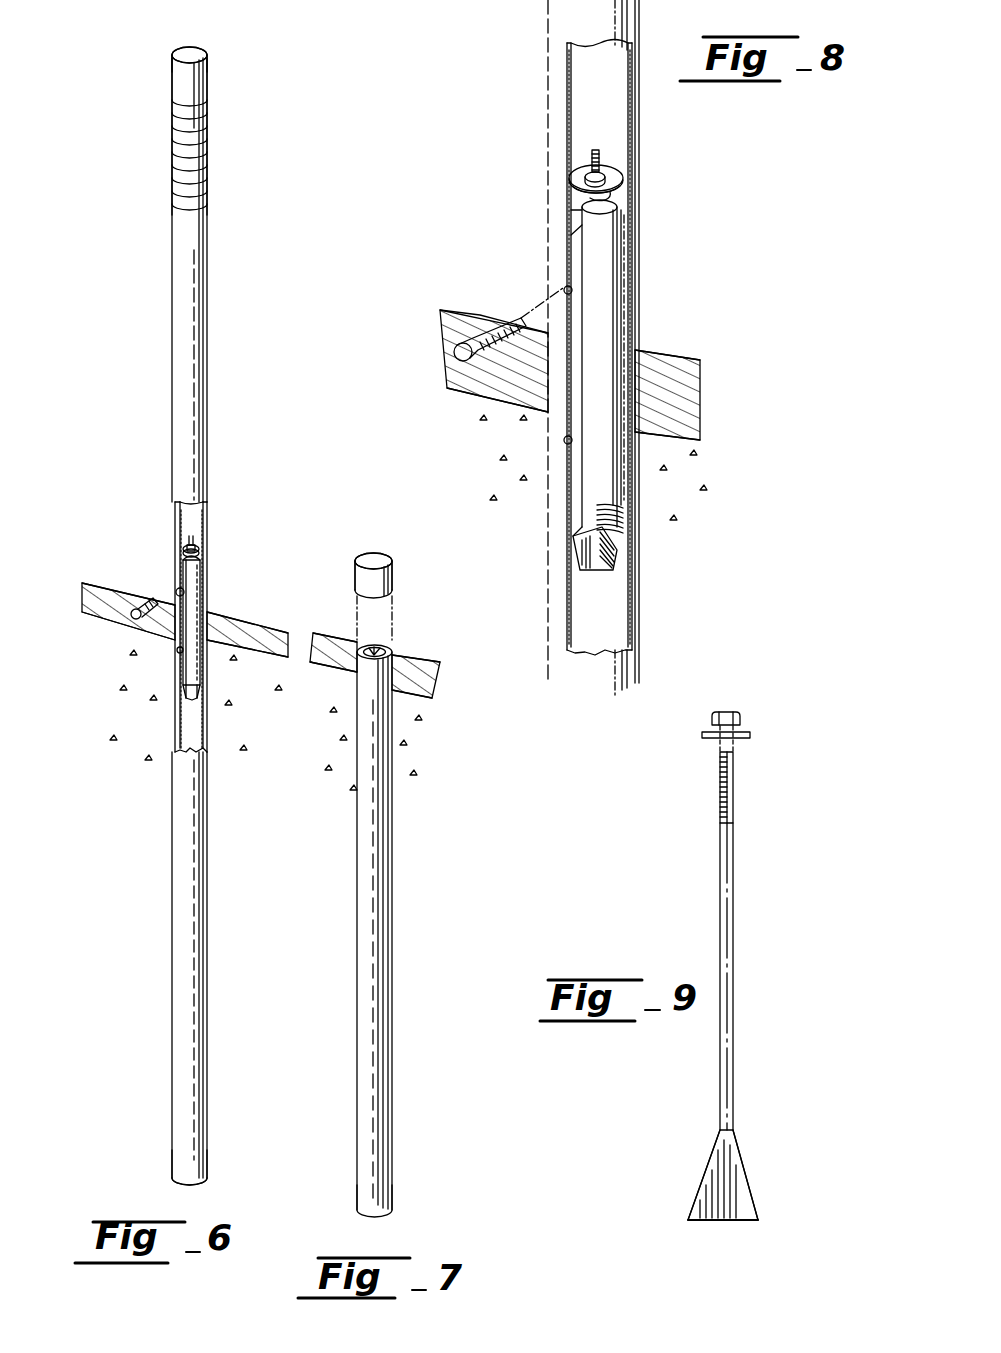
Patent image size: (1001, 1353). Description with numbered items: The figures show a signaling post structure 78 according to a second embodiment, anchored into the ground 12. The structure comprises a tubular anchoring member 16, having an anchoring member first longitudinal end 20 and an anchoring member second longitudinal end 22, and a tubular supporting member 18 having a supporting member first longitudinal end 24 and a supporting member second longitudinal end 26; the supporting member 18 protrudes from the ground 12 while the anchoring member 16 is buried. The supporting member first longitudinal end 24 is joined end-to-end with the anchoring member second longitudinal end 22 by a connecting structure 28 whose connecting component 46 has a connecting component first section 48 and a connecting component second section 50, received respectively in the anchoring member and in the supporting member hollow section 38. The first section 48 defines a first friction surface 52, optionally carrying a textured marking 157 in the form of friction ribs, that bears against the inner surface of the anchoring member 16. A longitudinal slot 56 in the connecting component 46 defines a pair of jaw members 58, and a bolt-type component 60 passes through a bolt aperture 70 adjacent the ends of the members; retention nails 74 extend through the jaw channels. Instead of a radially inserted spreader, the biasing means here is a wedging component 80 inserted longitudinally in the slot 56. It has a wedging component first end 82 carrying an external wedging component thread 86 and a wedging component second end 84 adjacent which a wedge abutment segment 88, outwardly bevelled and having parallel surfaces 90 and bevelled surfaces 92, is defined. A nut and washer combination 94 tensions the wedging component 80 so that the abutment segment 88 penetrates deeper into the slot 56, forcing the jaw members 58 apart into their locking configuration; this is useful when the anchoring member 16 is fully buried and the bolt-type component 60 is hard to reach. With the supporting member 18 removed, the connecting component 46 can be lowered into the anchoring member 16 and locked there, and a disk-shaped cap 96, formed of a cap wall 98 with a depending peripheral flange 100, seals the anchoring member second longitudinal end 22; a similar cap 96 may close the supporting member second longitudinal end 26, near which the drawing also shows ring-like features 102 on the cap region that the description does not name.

In FIG. 7, the ground 12 is at (408, 730).
In FIG. 6, the tubular anchoring member 16 is at (183, 893).
In FIG. 7, the tubular anchoring member 16 is at (365, 905).
In FIG. 8, the tubular anchoring member 16 is at (548, 656).
In FIG. 6, the tubular supporting member 18 is at (193, 352).
In FIG. 8, the tubular supporting member 18 is at (548, 86).
In FIG. 6, the anchoring member first longitudinal end 20 is at (160, 1155).
In FIG. 7, the anchoring member first longitudinal end 20 is at (405, 1197).
In FIG. 6, the anchoring member second longitudinal end 22 is at (350, 687).
In FIG. 8, the anchoring member second longitudinal end 22 is at (573, 415).
In FIG. 6, the supporting member first longitudinal end 24 is at (213, 606).
In FIG. 8, the supporting member first longitudinal end 24 is at (650, 348).
In FIG. 6, the supporting member second longitudinal end 26 is at (150, 50).
In FIG. 6, the connecting structure 28 is at (192, 666).
In FIG. 6, the supporting member hollow section 38 is at (188, 516).
In FIG. 7, the connecting component 46 is at (388, 640).
In FIG. 6, the connecting component first section 48 is at (188, 655).
In FIG. 6, the connecting component second section 50 is at (195, 588).
In FIG. 8, the first friction surface 52 is at (602, 476).
In FIG. 8, the slot 56 is at (578, 222).
In FIG. 8, the jaw members 58 is at (592, 270).
In FIG. 6, the bolt-type component 60 is at (130, 626).
In FIG. 8, the bolt-type component 60 is at (452, 353).
In FIG. 6, the bolt aperture 70 is at (178, 593).
In FIG. 8, the bolt aperture 70 is at (565, 288).
In FIG. 8, the retention nail 74 is at (626, 180).
In FIG. 6, the post structure 78 is at (95, 472).
In FIG. 9, the wedging component 80 is at (690, 880).
In FIG. 9, the wedging component first end 82 is at (768, 768).
In FIG. 9, the wedging component second end 84 is at (650, 1166).
In FIG. 8, the external wedging component thread 86 is at (590, 165).
In FIG. 9, the external wedging component thread 86 is at (720, 784).
In FIG. 6, the wedge abutment segment 88 is at (180, 712).
In FIG. 9, the wedge abutment segment 88 is at (785, 1180).
In FIG. 8, the abutment segment parallel surfaces 90 is at (586, 548).
In FIG. 9, the abutment segment parallel surfaces 90 is at (720, 1205).
In FIG. 8, the abutment segment bevelled surfaces 92 is at (618, 553).
In FIG. 9, the abutment segment bevelled surfaces 92 is at (702, 1190).
In FIG. 6, the nut and washer combination 94 is at (191, 546).
In FIG. 8, the nut and washer combination 94 is at (572, 178).
In FIG. 9, the nut and washer combination 94 is at (760, 718).
In FIG. 6, the cap 96 is at (213, 70).
In FIG. 7, the cap 96 is at (405, 572).
In FIG. 6, the cap wall 98 is at (197, 53).
In FIG. 7, the cap wall 98 is at (382, 560).
In FIG. 6, the peripheral flange 100 is at (180, 85).
In FIG. 7, the peripheral flange 100 is at (362, 580).
In FIG. 6, the cap ridges 102 is at (172, 168).
In FIG. 8, the textured marking 157 is at (600, 510).